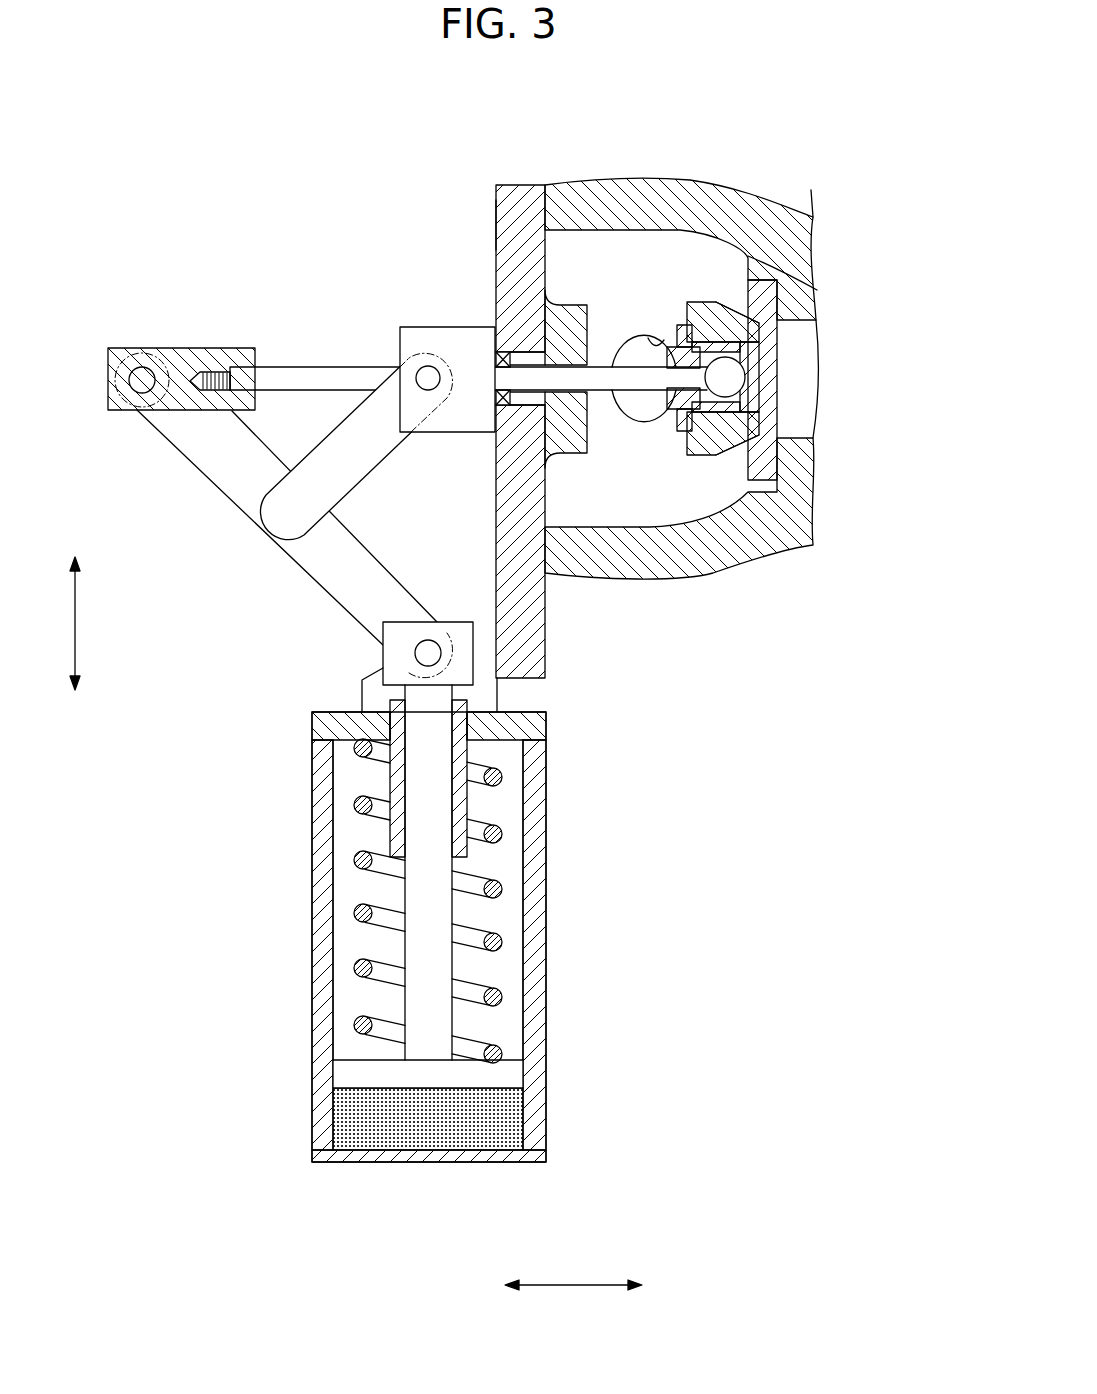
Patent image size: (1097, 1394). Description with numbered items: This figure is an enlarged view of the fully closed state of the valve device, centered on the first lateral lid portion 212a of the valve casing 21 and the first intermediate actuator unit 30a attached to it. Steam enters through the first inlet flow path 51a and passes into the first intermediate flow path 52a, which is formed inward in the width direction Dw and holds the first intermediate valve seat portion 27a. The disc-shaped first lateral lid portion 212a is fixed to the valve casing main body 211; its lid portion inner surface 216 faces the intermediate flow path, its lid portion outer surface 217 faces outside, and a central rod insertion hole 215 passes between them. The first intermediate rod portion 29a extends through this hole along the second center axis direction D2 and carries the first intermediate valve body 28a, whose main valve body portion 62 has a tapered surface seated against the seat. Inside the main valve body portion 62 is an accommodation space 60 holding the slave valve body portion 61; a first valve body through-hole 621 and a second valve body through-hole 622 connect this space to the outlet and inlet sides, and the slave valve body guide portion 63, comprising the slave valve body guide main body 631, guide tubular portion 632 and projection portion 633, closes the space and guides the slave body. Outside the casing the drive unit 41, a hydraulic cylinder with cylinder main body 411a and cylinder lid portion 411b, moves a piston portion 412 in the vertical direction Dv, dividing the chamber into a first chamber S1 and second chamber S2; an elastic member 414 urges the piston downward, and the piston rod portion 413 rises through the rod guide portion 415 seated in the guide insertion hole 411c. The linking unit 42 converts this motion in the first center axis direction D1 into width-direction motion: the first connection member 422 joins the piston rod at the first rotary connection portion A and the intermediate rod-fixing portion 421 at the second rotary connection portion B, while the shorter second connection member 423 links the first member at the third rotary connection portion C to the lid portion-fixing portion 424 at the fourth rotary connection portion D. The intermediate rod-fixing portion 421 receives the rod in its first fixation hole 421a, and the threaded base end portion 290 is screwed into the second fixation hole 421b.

The valve casing 21 is at (752, 343).
The valve casing main body 211 is at (790, 240).
The first intermediate valve seat portion 27a is at (778, 452).
The first intermediate flow path 52a is at (803, 413).
The first lateral lid portion 212a is at (553, 377).
The rod insertion hole 215 is at (566, 360).
The lid portion inner surface 216 is at (590, 318).
The lid portion outer surface 217 is at (495, 223).
The first inlet flow path 51a is at (657, 337).
The accommodation space 60 is at (771, 381).
The slave valve body guide portion 63 is at (740, 310).
The main valve body portion 62 is at (752, 333).
The first valve body through-hole 621 is at (752, 381).
The second valve body through-hole 622 is at (687, 327).
The projection portion 633 is at (673, 420).
The slave valve body guide main body 631 is at (683, 428).
The guide tubular portion 632 is at (700, 422).
The slave valve body portion 61 is at (748, 470).
The first intermediate valve body 28a is at (734, 288).
The first intermediate rod portion 29a is at (326, 352).
The linking unit 42 is at (286, 461).
The first connection member 422 is at (287, 527).
The second connection member 423 is at (337, 478).
The lid portion-fixing portion 424 is at (447, 367).
The intermediate rod-fixing portion 421 is at (189, 391).
The first fixation hole 421a is at (233, 385).
The second fixation hole 421b is at (250, 345).
The base end portion 290 is at (208, 345).
The first rotary connection portion A is at (427, 652).
The second rotary connection portion B is at (138, 384).
The third rotary connection portion C is at (272, 510).
The fourth rotary connection portion D is at (430, 382).
The first intermediate actuator unit 30a is at (404, 959).
The drive unit 41 is at (437, 967).
The cylinder lid portion 411b is at (533, 723).
The cylinder main body 411a is at (533, 1108).
The guide insertion hole 411c is at (450, 748).
The piston portion 412 is at (347, 1073).
The piston rod portion 413 is at (438, 1018).
The elastic member 414 is at (385, 860).
The rod guide portion 415 is at (463, 847).
The first chamber S1 is at (347, 825).
The second chamber S2 is at (382, 1130).
The vertical direction Dv is at (77, 623).
The first center axis direction D1 is at (91, 623).
The width direction Dw is at (573, 1287).
The second center axis direction D2 is at (573, 1298).